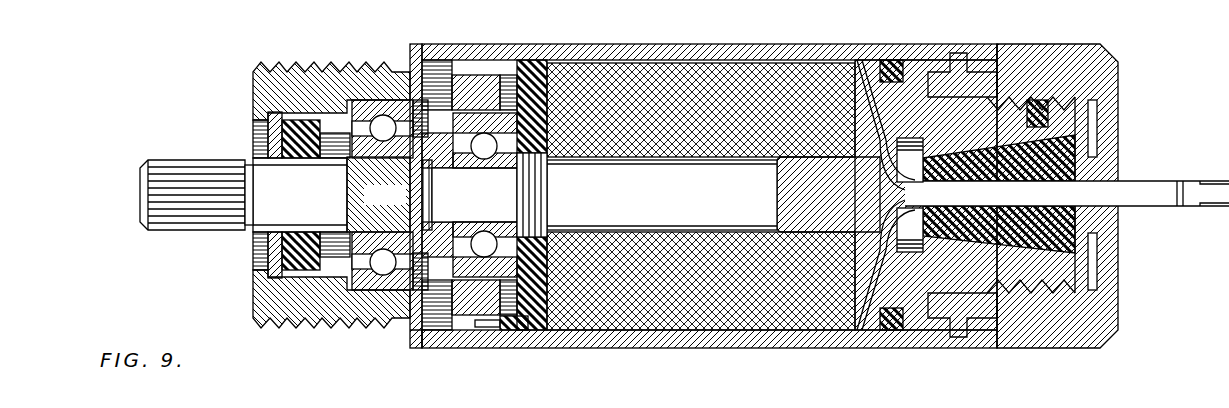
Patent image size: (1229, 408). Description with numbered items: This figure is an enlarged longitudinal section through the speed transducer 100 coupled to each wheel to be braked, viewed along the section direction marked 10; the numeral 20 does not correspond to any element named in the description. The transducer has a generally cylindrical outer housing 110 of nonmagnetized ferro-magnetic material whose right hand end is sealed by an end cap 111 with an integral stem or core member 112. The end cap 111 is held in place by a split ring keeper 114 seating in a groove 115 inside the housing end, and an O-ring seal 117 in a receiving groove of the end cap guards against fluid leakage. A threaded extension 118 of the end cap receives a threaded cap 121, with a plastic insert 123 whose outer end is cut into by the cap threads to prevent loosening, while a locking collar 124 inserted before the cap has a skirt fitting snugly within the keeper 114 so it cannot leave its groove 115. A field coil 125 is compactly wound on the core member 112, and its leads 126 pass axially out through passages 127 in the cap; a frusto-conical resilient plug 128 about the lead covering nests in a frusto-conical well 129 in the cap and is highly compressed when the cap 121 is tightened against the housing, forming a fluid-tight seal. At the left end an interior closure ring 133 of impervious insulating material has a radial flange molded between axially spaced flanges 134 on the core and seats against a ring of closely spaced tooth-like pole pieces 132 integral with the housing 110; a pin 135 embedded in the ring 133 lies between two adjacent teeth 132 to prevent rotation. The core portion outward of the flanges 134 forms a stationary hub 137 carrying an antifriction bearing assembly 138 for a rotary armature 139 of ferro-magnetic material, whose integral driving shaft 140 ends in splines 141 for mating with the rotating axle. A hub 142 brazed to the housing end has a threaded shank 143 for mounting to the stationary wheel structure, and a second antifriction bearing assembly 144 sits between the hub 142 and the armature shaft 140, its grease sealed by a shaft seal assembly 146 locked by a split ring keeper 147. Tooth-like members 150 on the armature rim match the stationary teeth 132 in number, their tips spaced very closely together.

The section view direction arrows 10 is at (472, 10).
The threaded connection 20 is at (1057, 100).
The speed transducer 100 is at (740, 355).
The outer housing 110 is at (655, 46).
The end cap 111 is at (867, 318).
The core member 112 is at (713, 194).
The split ring keeper 114 is at (955, 55).
The groove 115 is at (957, 336).
The O-ring seal 117 is at (892, 60).
The threaded extension 118 is at (1065, 268).
The threaded cap 121 is at (1110, 312).
The plastic insert 123 is at (1032, 100).
The locking collar 124 is at (983, 320).
The field coil 125 is at (727, 77).
The leads 126 is at (1183, 192).
The passages 127 is at (842, 77).
The frusto-conical resilient plug 128 is at (1065, 150).
The frusto-conical well 129 is at (1080, 230).
The pole pieces 132 is at (490, 62).
The closure ring 133 is at (540, 330).
The flanges 134 is at (522, 182).
The pin 135 is at (500, 330).
The stationary shaft or hub 137 is at (378, 194).
The antifriction bearing assembly 138 is at (482, 152).
The rotary armature 139 is at (410, 62).
The driving shaft 140 is at (235, 207).
The splines 141 is at (172, 160).
The hub 142 is at (420, 346).
The threaded shank 143 is at (327, 324).
The antifriction bearing assembly 144 is at (381, 276).
The shaft seal assembly 146 is at (300, 233).
The split ring keeper 147 is at (276, 258).
The tooth-like members 150 is at (466, 82).